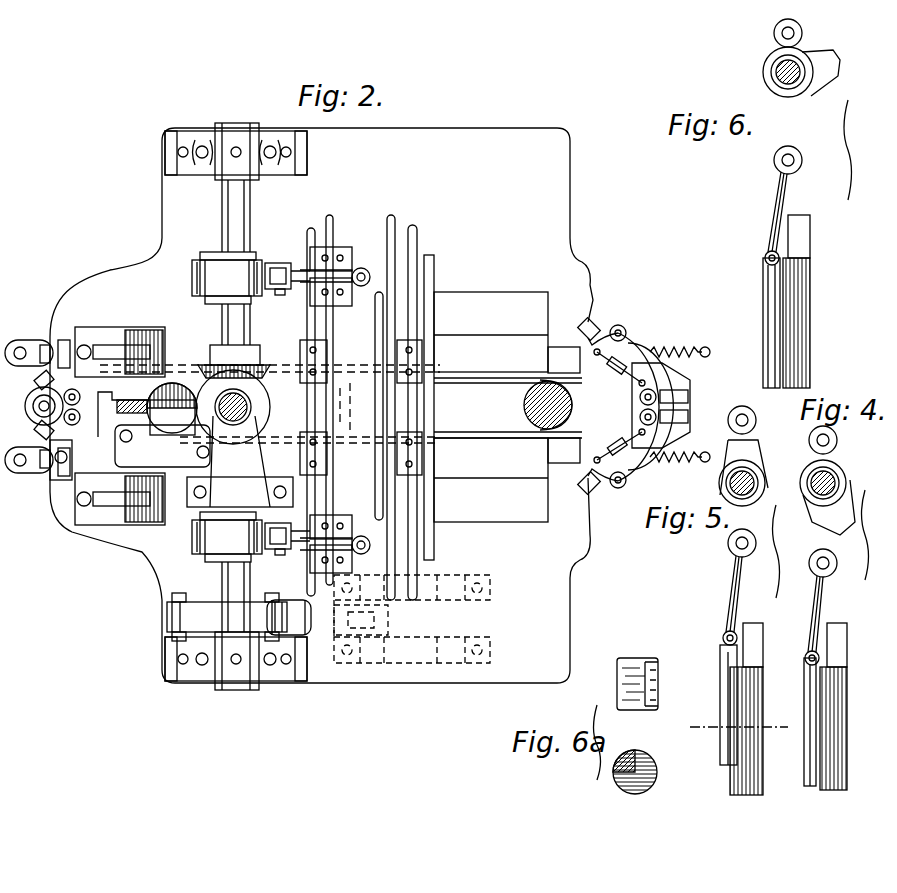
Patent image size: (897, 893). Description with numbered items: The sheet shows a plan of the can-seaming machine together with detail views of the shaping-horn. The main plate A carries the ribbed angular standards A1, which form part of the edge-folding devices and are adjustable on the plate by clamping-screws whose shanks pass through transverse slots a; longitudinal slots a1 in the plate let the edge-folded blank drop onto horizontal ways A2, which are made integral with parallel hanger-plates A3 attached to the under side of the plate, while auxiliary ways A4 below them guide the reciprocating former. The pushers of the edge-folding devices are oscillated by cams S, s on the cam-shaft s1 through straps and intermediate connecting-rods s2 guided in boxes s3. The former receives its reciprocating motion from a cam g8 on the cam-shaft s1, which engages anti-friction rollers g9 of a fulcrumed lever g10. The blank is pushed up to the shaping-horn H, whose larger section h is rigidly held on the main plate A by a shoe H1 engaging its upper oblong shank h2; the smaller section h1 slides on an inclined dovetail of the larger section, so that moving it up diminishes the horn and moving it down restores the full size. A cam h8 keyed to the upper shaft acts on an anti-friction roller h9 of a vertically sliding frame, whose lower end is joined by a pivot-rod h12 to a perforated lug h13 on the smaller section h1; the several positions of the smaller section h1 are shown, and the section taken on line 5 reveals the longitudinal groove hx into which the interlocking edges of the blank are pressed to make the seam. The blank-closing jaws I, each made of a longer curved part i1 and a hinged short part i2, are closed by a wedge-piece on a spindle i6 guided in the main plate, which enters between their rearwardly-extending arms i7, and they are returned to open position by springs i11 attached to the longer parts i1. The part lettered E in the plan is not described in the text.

In FIG. 2, the main plate A is at (321, 405).
In FIG. 2, the ribbed angular standards A1 is at (240, 410).
In FIG. 2, the horizontal ways A2 is at (508, 408).
In FIG. 2, the hanger-plates A3 is at (491, 407).
In FIG. 2, the auxiliary ways A4 is at (564, 405).
In FIG. 2, the transverse slots a is at (363, 409).
In FIG. 2, the longitudinal slots a1 is at (361, 411).
In FIG. 2, the cams S is at (244, 406).
In FIG. 2, the worm s is at (200, 555).
In FIG. 2, the cam-shaft s1 is at (227, 407).
In FIG. 2, the connecting-rods s2 is at (302, 286).
In FIG. 2, the boxes s3 is at (335, 410).
In FIG. 2, the shaping-horn H is at (175, 388).
In FIG. 2, the shoe H1 is at (162, 446).
In FIG. 2, the block E is at (124, 414).
In FIG. 2, the blank-closing jaws I is at (634, 410).
In FIG. 2, the longer part of jaw i1 is at (365, 426).
In FIG. 2, the springs i11 is at (680, 397).
In FIG. 2, the short part of jaw i2 is at (619, 413).
In FIG. 2, the spindle i6 is at (33, 406).
In FIG. 2, the rearwardly-extending arms i7 is at (48, 425).
In FIG. 2, the cam g8 is at (227, 617).
In FIG. 2, the anti-friction rollers g9 is at (178, 617).
In FIG. 2, the fulcrumed lever g10 is at (335, 625).
In FIG. 6, the larger section of horn h is at (809, 323).
In FIG. 4, the larger section of horn h is at (841, 728).
In FIG. 5, the larger section of horn h is at (753, 731).
In FIG. 6A, the larger section of horn h is at (635, 726).
In FIG. 6, the smaller section of horn h1 is at (768, 292).
In FIG. 4, the smaller section of horn h1 is at (801, 722).
In FIG. 5, the smaller section of horn h1 is at (715, 705).
In FIG. 6A, the smaller section of horn h1 is at (642, 716).
In FIG. 6, the upper oblong shank h2 is at (811, 236).
In FIG. 4, the upper oblong shank h2 is at (849, 645).
In FIG. 5, the upper oblong shank h2 is at (766, 645).
In FIG. 6, the cam h8 is at (802, 72).
In FIG. 4, the cam h8 is at (827, 497).
In FIG. 5, the cam h8 is at (750, 456).
In FIG. 6, the anti-friction roller h9 is at (775, 33).
In FIG. 4, the anti-friction roller h9 is at (837, 440).
In FIG. 5, the anti-friction roller h9 is at (754, 420).
In FIG. 6, the pivot-rod h12 is at (775, 199).
In FIG. 4, the pivot-rod h12 is at (814, 600).
In FIG. 5, the pivot-rod h12 is at (732, 580).
In FIG. 4, the perforated lug h13 is at (806, 656).
In FIG. 5, the perforated lug h13 is at (722, 638).
In FIG. 6, the longitudinal groove hx is at (781, 402).
In FIG. 4, the longitudinal groove hx is at (817, 800).
In FIG. 5, the longitudinal groove hx is at (741, 804).
In FIG. 6A, the longitudinal groove hx is at (635, 693).
In FIG. 5, the section line 5 is at (738, 728).